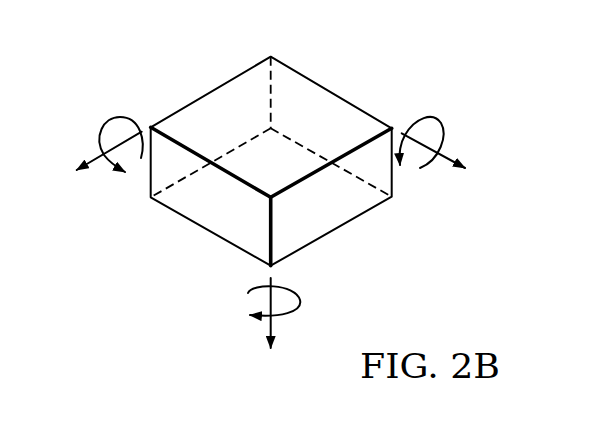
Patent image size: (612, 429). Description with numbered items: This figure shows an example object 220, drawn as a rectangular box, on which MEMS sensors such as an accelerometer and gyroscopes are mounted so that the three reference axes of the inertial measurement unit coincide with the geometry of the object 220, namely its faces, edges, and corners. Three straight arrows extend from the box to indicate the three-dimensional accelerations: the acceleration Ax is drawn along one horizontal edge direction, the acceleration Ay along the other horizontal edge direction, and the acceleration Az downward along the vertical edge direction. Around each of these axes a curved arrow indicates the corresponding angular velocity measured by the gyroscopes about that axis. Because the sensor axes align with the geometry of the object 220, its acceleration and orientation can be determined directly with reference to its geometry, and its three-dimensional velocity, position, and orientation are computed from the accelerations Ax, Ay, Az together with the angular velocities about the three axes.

The object 220 is at (212, 102).
The acceleration along x axis Ax is at (447, 164).
The acceleration along y axis Ay is at (96, 162).
The acceleration along z axis Az is at (271, 329).